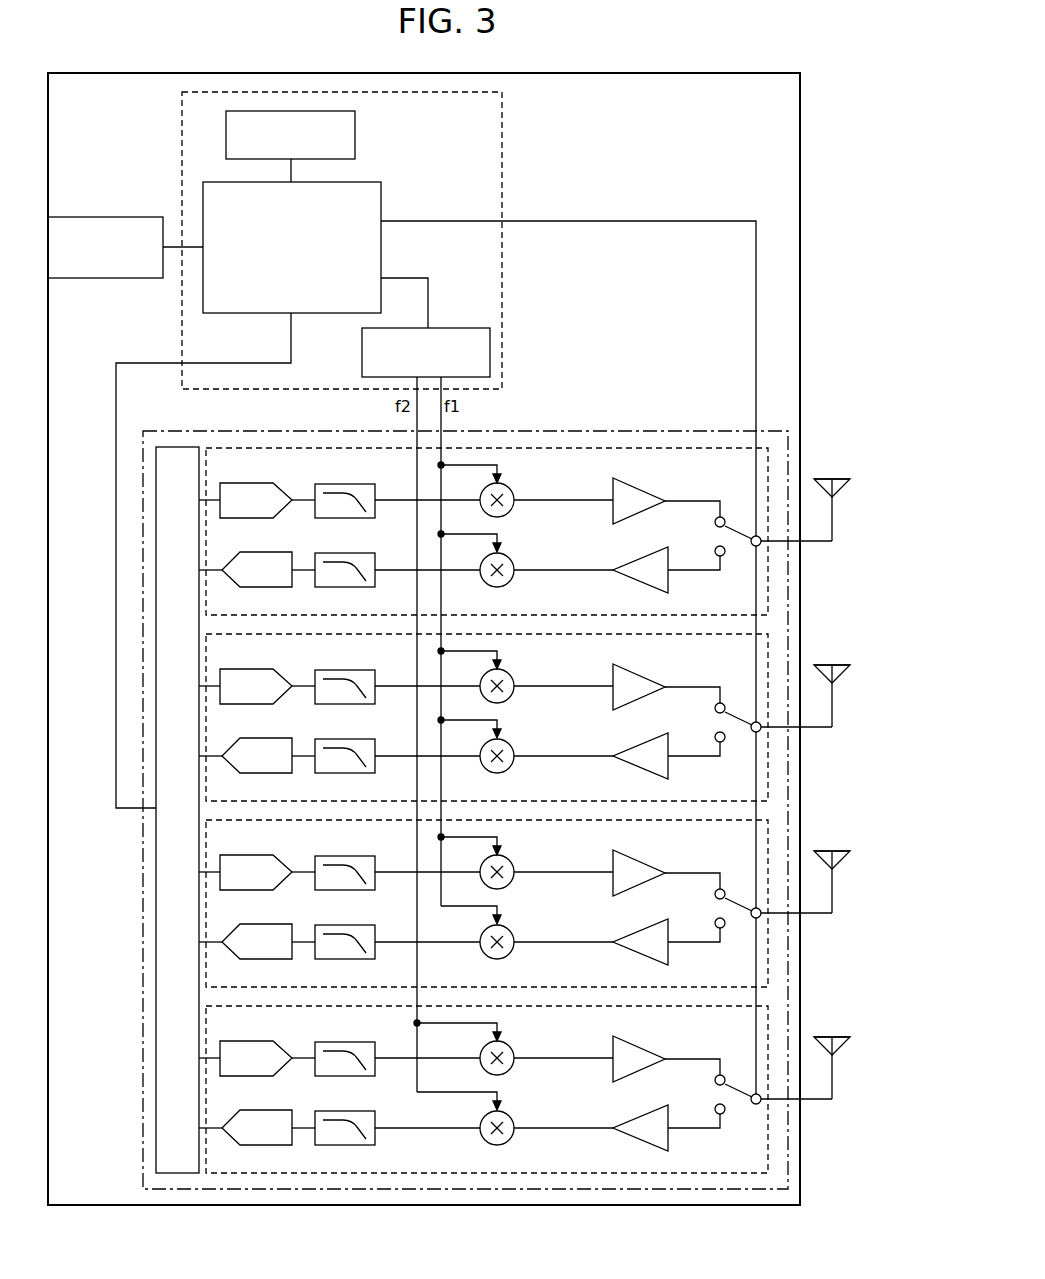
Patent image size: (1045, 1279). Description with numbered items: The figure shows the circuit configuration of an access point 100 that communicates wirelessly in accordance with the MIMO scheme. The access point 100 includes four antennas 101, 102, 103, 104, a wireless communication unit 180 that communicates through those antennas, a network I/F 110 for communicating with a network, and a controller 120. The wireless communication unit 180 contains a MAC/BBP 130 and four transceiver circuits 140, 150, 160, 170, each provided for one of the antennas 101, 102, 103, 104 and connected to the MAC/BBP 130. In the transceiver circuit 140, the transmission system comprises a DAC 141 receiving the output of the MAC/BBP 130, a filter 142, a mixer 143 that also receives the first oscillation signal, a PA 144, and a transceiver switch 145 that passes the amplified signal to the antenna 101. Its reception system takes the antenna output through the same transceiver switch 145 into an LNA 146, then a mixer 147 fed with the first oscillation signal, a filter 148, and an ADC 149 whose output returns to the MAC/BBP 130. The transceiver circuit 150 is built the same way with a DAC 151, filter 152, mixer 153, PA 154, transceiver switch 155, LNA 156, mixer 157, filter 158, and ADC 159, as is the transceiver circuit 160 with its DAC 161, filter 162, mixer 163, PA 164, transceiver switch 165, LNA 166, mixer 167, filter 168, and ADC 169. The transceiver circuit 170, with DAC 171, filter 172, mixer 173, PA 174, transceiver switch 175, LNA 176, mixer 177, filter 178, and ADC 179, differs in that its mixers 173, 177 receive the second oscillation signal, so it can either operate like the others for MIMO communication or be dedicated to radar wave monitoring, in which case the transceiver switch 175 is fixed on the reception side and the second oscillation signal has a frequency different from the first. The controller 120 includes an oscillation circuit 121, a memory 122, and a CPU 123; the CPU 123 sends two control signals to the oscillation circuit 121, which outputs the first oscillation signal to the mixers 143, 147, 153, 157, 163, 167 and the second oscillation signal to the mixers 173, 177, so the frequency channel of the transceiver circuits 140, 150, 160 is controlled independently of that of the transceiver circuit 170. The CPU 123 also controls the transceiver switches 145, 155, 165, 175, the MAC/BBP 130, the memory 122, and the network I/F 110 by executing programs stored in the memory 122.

The access point 100 is at (710, 73).
The antenna 101 is at (832, 479).
The antenna 102 is at (833, 670).
The antenna 103 is at (833, 856).
The antenna 104 is at (833, 1042).
The network I/F 110 is at (110, 217).
The controller 120 is at (502, 141).
The oscillation circuit 121 is at (445, 328).
The memory 122 is at (355, 134).
The CPU 123 is at (381, 198).
The MAC/BBP 130 is at (177, 447).
The transceiver circuit 140 is at (768, 583).
The digital/analog converter (DAC) 141 is at (252, 483).
The filter 142 is at (347, 484).
The mixer 143 is at (508, 486).
The power amplifier (PA) 144 is at (637, 479).
The transceiver switch 145 is at (740, 524).
The low noise amplifier (LNA) 146 is at (645, 550).
The mixer 147 is at (508, 556).
The filter 148 is at (347, 553).
The analog/digital converter (ADC) 149 is at (253, 552).
The transceiver circuit 150 is at (526, 707).
The digital/analog converter (DAC) 151 is at (261, 673).
The filter 152 is at (356, 673).
The mixer 153 is at (518, 675).
The power amplifier (PA) 154 is at (649, 679).
The transceiver switch 155 is at (735, 698).
The low noise amplifier (LNA) 156 is at (630, 747).
The mixer 157 is at (518, 745).
The filter 158 is at (356, 742).
The analog/digital converter (ADC) 159 is at (262, 742).
The transceiver circuit 160 is at (526, 893).
The digital/analog converter (DAC) 161 is at (261, 859).
The filter 162 is at (356, 859).
The mixer 163 is at (518, 861).
The power amplifier (PA) 164 is at (649, 865).
The transceiver switch 165 is at (735, 884).
The low noise amplifier (LNA) 166 is at (630, 933).
The mixer 167 is at (518, 931).
The filter 168 is at (356, 928).
The analog/digital converter (ADC) 169 is at (262, 928).
The transceiver circuit 170 is at (526, 1079).
The digital/analog converter (DAC) 171 is at (261, 1045).
The filter 172 is at (356, 1045).
The mixer 173 is at (518, 1047).
The power amplifier (PA) 174 is at (649, 1051).
The transceiver switch 175 is at (735, 1070).
The low noise amplifier (LNA) 176 is at (630, 1119).
The mixer 177 is at (518, 1117).
The filter 178 is at (356, 1114).
The analog/digital converter (ADC) 179 is at (262, 1114).
The wireless communication unit 180 is at (638, 431).